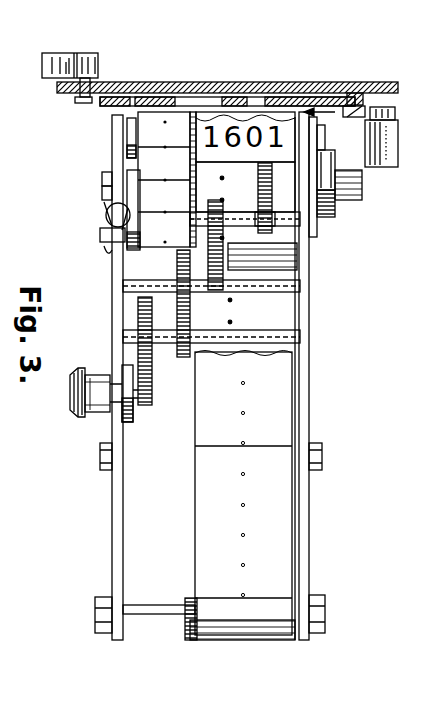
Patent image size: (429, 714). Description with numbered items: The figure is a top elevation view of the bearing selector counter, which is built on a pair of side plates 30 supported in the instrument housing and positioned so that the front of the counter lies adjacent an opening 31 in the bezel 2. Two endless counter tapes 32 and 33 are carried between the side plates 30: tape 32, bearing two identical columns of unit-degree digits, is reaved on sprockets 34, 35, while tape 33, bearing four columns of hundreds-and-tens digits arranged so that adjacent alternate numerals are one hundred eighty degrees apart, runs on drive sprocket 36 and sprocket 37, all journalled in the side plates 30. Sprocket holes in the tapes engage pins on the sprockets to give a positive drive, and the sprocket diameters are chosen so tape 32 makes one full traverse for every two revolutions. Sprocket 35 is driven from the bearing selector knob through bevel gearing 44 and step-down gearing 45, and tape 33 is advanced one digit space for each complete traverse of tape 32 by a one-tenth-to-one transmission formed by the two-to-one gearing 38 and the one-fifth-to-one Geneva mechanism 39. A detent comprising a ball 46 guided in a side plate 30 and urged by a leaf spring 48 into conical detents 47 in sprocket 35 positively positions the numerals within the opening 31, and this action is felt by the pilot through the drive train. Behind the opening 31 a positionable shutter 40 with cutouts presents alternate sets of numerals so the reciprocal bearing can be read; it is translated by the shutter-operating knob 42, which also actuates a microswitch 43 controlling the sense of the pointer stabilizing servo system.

The bezel 2 is at (355, 92).
The side plates 30 is at (112, 545).
The opening 31 is at (302, 82).
The endless counter tape 32 is at (148, 172).
The endless counter tape 33 is at (292, 380).
The sprocket 34 is at (135, 116).
The sprocket 35 is at (170, 303).
The drive sprocket 36 is at (192, 112).
The sprocket 37 is at (192, 640).
The 2:1 gearing 38 is at (273, 205).
The Geneva mechanism 39 is at (344, 220).
The shutter 40 is at (240, 97).
The shutter-operating knob 42 is at (77, 52).
The microswitch 43 is at (398, 146).
The bevel gearing 44 is at (78, 418).
The step-down gearing 45 is at (157, 386).
The ball 46 is at (110, 246).
The conical detents 47 is at (112, 205).
The leaf spring 48 is at (100, 236).